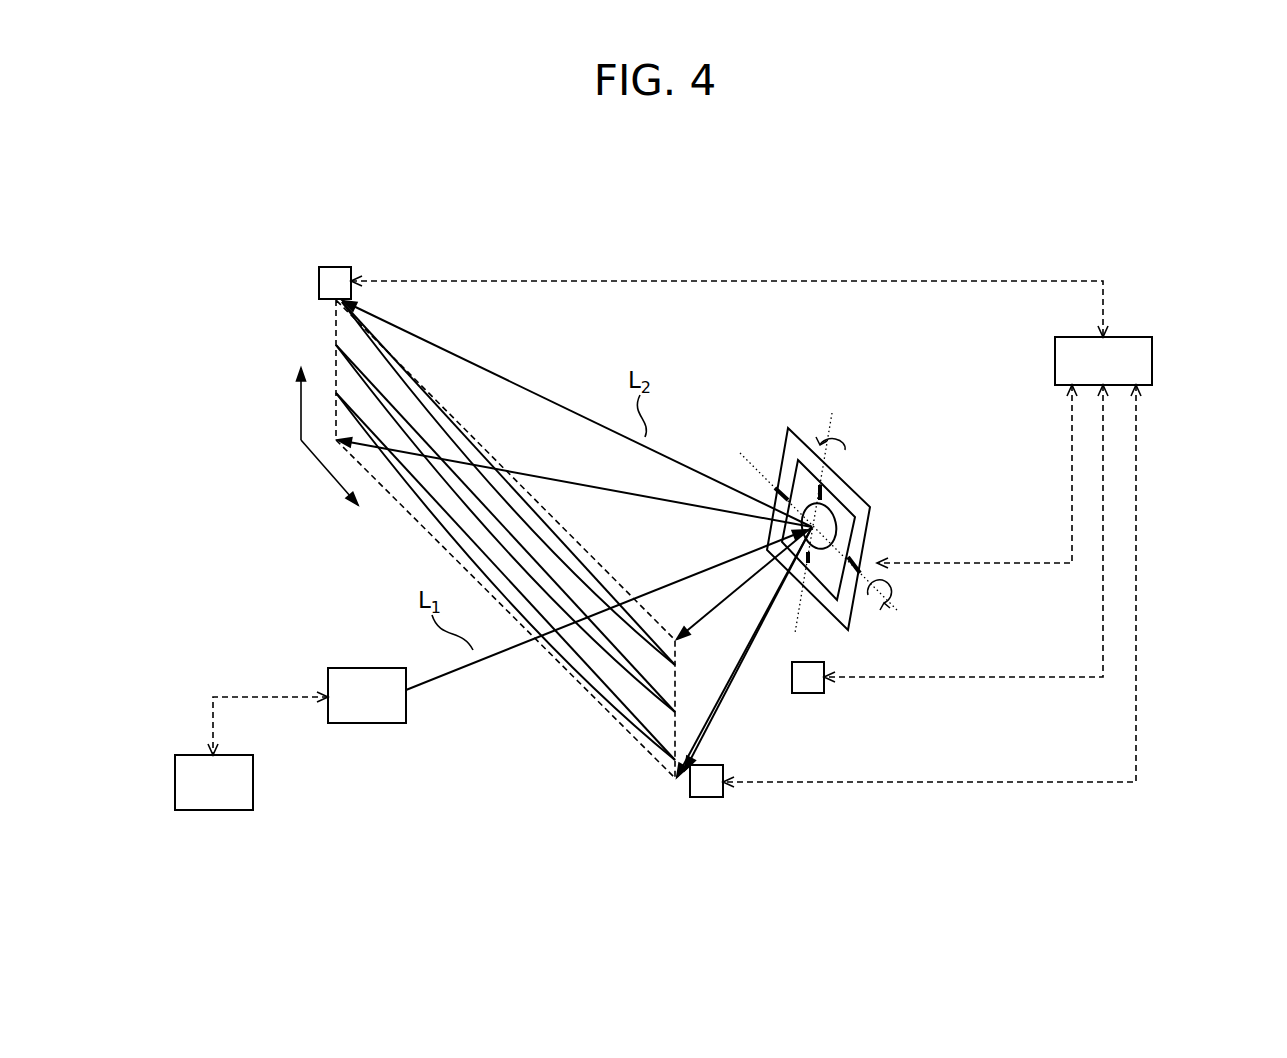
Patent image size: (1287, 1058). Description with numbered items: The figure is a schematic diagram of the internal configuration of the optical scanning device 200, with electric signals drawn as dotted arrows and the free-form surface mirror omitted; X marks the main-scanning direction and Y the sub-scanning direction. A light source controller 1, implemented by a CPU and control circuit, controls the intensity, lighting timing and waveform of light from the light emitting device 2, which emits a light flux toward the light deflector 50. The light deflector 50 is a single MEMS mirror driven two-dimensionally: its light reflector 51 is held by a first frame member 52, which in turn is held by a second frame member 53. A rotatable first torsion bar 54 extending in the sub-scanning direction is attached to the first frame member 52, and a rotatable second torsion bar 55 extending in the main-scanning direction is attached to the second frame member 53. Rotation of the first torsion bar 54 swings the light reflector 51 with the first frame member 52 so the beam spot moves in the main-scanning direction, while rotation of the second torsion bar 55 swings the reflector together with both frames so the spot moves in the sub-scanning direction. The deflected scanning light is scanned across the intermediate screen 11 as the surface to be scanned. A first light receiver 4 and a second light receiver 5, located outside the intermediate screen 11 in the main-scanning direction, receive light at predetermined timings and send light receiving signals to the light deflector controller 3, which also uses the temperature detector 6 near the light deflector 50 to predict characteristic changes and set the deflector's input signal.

The light source controller 1 is at (213, 810).
The light emitting device 2 is at (368, 723).
The light deflector controller 3 is at (1152, 360).
The first light receiver 4 is at (339, 266).
The second light receiver 5 is at (703, 797).
The temperature detector 6 is at (807, 693).
The intermediate screen 11 is at (336, 335).
The light deflector 50 is at (783, 410).
The light reflector 51 is at (843, 483).
The first frame member 52 is at (877, 507).
The second frame member 53 is at (780, 460).
The first torsion bar 54 is at (817, 563).
The second torsion bar 55 is at (867, 543).
The optical scanning device 200 is at (1090, 205).